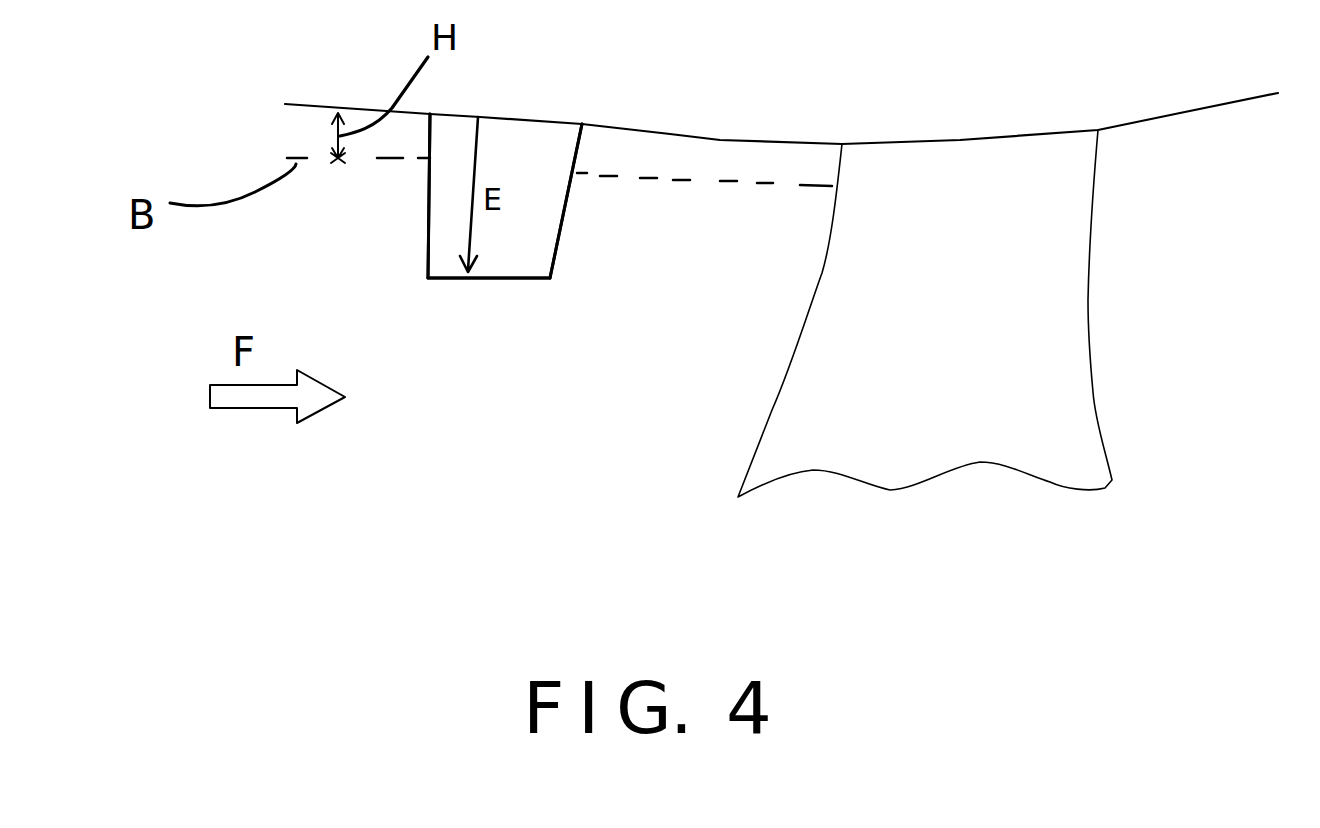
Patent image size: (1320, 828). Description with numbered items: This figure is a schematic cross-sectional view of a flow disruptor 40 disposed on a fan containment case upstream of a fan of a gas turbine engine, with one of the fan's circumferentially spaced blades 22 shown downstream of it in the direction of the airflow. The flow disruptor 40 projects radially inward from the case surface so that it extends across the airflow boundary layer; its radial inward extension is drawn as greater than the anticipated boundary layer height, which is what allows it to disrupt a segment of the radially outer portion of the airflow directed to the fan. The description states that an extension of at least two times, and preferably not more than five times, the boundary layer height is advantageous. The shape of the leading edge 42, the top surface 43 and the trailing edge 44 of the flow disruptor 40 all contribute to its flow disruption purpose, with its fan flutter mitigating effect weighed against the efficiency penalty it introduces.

The blades 22 is at (1033, 381).
The flow disruptor 40 is at (507, 84).
The leading edge 42 is at (430, 200).
The top surface 43 is at (474, 281).
The trailing edge 44 is at (563, 220).